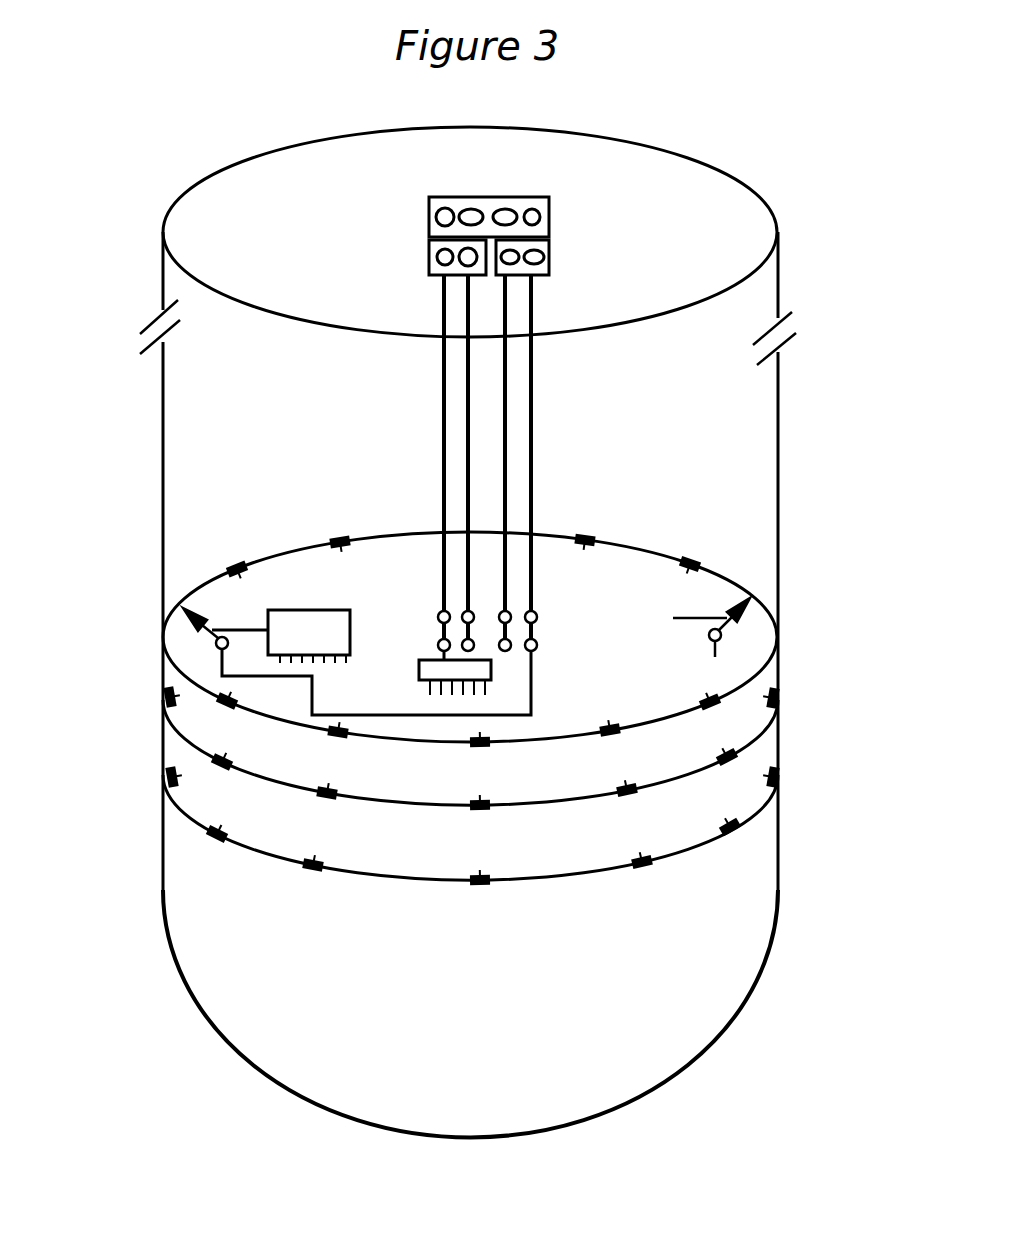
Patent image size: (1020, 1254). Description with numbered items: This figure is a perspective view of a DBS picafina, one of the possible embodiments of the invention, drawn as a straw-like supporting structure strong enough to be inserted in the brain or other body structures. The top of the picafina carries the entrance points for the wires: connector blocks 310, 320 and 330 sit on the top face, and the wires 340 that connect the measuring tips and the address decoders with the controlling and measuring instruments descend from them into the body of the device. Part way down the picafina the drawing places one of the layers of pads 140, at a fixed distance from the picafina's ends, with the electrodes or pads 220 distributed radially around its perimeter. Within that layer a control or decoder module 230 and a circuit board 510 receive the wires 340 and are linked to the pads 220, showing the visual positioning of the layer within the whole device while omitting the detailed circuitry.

The sensor rings 140 is at (313, 877).
The sensor 220 is at (205, 612).
The control module 230 is at (295, 592).
The connector 310 is at (586, 266).
The connector 320 is at (397, 234).
The connector 330 is at (403, 176).
The wires 340 is at (569, 377).
The circuit board 510 is at (420, 625).